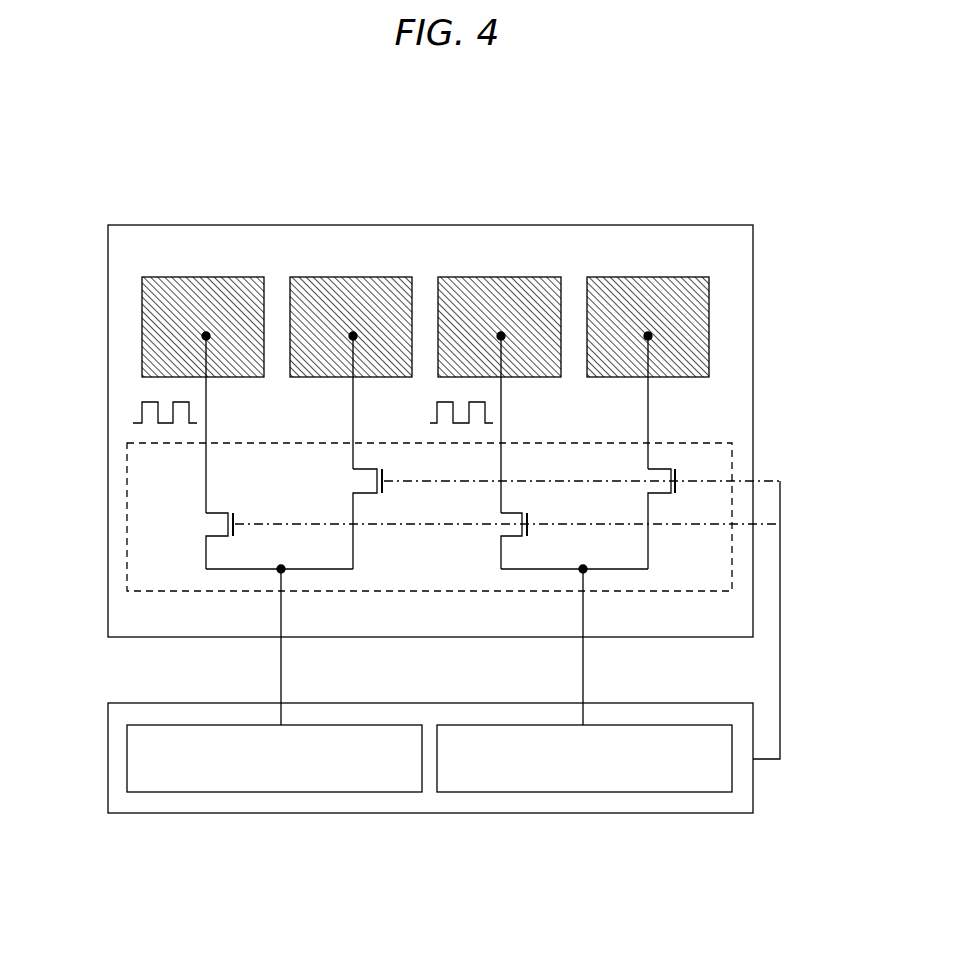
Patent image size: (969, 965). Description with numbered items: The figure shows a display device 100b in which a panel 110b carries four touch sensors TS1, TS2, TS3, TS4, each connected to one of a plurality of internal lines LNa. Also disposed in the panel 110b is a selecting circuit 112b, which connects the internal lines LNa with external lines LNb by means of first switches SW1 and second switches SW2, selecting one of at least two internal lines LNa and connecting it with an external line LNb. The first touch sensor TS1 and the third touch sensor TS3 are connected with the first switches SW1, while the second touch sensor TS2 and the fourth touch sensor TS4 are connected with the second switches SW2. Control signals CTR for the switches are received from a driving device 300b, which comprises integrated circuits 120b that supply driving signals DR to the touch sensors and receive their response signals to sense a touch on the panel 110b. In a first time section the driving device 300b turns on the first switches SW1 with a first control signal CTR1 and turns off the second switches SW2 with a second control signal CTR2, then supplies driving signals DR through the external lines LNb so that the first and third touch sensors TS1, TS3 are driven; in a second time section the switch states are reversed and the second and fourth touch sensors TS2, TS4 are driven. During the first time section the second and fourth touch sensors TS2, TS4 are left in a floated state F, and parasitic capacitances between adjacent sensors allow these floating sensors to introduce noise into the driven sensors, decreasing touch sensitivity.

The touch sensing device 100b is at (173, 140).
The panel 110b is at (420, 225).
The selecting circuit 112b is at (733, 449).
The integrated circuit 120b is at (285, 792).
The driving device 300b is at (430, 813).
The first touch sensor TS1 is at (205, 277).
The second touch sensor TS2 is at (348, 277).
The third touch sensor TS3 is at (500, 277).
The fourth touch sensor TS4 is at (647, 277).
The internal lines LNa is at (206, 434).
The external lines LNb is at (281, 683).
The driving signals DR is at (302, 401).
The floating state F is at (472, 409).
The first switches SW1 is at (337, 541).
The second switches SW2 is at (481, 519).
The first control signal CTR1 is at (507, 542).
The second control signal CTR2 is at (582, 501).
The control signals CTR is at (800, 620).